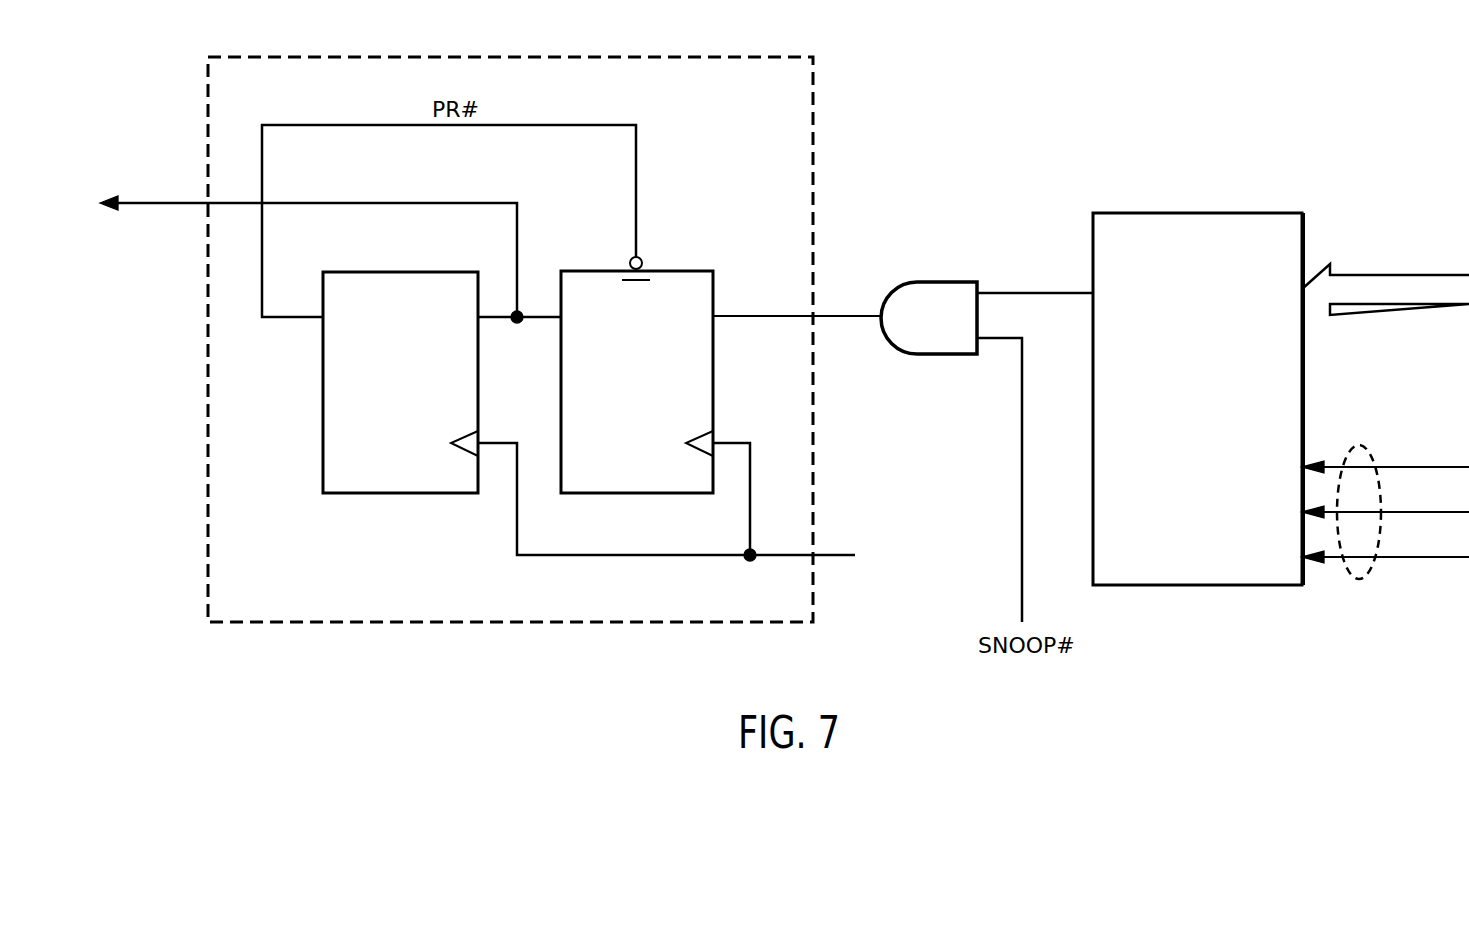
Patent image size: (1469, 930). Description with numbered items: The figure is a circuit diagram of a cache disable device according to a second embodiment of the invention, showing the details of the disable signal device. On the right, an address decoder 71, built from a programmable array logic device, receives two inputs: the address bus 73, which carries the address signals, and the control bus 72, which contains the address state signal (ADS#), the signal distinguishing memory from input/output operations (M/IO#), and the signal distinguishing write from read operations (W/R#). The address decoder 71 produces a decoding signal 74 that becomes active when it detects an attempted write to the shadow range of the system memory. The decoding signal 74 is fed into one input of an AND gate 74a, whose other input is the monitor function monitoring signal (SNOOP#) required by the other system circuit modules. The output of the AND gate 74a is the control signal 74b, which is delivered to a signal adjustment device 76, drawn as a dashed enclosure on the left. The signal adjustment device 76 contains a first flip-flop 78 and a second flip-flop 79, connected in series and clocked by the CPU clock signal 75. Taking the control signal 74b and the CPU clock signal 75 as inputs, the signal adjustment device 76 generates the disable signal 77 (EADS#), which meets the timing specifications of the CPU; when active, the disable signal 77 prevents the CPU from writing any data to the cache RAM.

The address decoder 71 is at (1200, 213).
The control bus 72 is at (1358, 580).
The address bus 73 is at (1380, 275).
The decoding signal 74 is at (1025, 293).
The AND gate 74a is at (928, 282).
The control signal 74b is at (845, 316).
The CPU clock signal 75 is at (900, 572).
The signal adjustment device 76 is at (599, 57).
The disable signal 77 is at (153, 203).
The first flip-flop 78 is at (674, 271).
The second flip-flop 79 is at (414, 272).